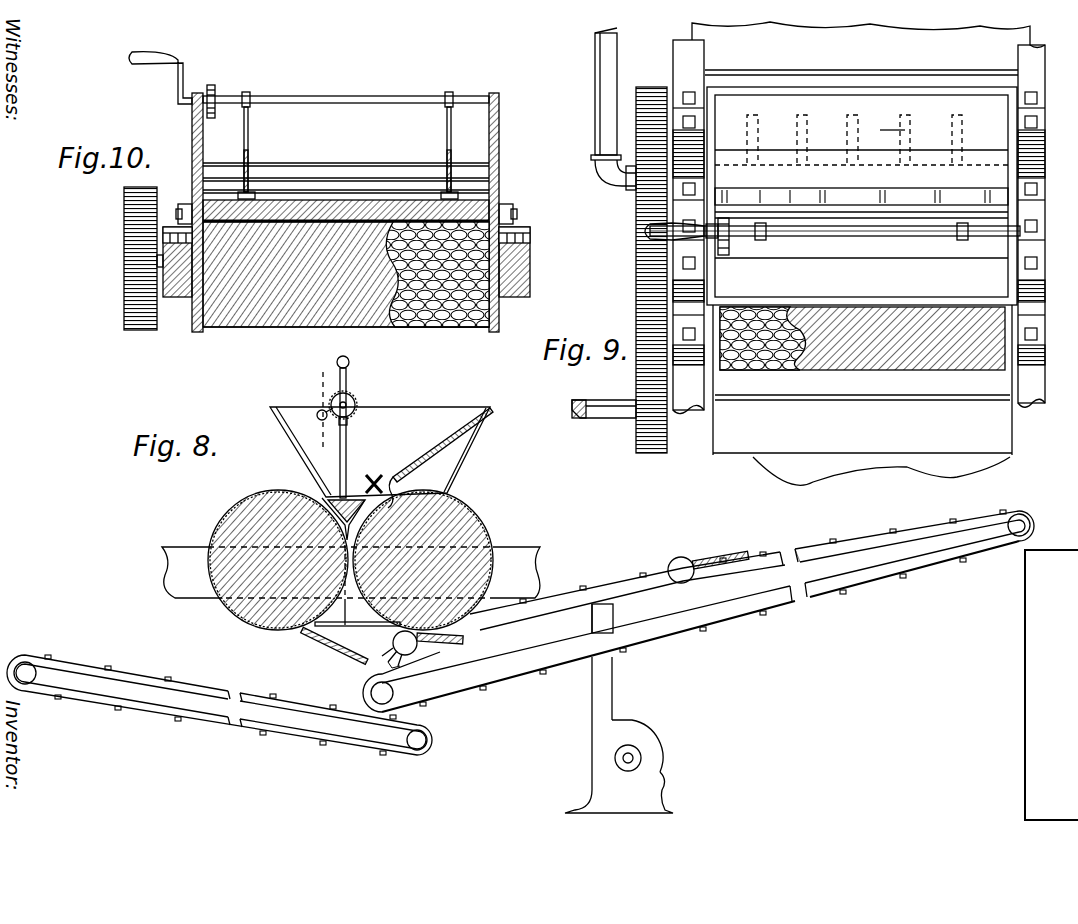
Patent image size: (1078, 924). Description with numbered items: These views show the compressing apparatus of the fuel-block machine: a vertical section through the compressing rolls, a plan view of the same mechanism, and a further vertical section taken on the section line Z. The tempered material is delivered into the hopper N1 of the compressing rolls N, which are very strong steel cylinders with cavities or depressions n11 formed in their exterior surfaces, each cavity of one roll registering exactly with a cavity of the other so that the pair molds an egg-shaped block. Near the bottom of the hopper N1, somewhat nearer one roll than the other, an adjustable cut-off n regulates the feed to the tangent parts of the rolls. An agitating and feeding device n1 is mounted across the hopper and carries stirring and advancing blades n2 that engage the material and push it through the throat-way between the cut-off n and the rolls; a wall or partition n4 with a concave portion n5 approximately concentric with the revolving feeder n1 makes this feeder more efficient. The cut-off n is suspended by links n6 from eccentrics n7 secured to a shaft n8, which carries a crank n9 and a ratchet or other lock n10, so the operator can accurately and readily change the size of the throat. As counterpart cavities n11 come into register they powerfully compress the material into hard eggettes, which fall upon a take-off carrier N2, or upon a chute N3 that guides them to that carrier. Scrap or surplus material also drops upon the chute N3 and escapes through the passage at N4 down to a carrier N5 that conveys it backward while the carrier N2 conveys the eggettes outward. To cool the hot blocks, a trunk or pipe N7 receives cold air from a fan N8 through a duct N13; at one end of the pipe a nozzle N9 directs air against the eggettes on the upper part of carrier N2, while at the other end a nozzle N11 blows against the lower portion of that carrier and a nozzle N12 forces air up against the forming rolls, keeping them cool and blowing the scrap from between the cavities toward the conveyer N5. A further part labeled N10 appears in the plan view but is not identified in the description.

In FIG. 10, the compressing rolls N is at (330, 279).
In FIG. 9, the compressing rolls N is at (862, 338).
In FIG. 8, the compressing rolls N is at (340, 559).
In FIG. 10, the hopper N1 is at (345, 212).
In FIG. 9, the hopper N1 is at (862, 196).
In FIG. 8, the hopper N1 is at (380, 435).
In FIG. 9, the take-off carrier N2 is at (859, 218).
In FIG. 8, the take-off carrier N2 is at (809, 543).
In FIG. 8, the chute N3 is at (332, 650).
In FIG. 8, the passage N4 is at (686, 611).
In FIG. 9, the carrier N5 is at (792, 395).
In FIG. 8, the carrier N5 is at (219, 701).
In FIG. 9, the trunk or pipe N7 is at (598, 109).
In FIG. 8, the trunk or pipe N7 is at (582, 596).
In FIG. 8, the fan N8 is at (650, 737).
In FIG. 8, the nozzle N9 is at (708, 552).
In FIG. 9, the bar N10 is at (876, 170).
In FIG. 8, the nozzle N11 is at (463, 640).
In FIG. 8, the nozzle N12 is at (386, 647).
In FIG. 8, the duct N13 is at (619, 735).
In FIG. 9, the adjustable cut-off n is at (822, 246).
In FIG. 8, the adjustable cut-off n is at (334, 495).
In FIG. 10, the agitating and feeding device n1 is at (346, 163).
In FIG. 8, the agitating and feeding device n1 is at (376, 472).
In FIG. 10, the stirring and advancing blades n2 is at (296, 168).
In FIG. 9, the stirring and advancing blades n2 is at (861, 182).
In FIG. 8, the stirring and advancing blades n2 is at (370, 478).
In FIG. 8, the wall or partition n4 is at (443, 445).
In FIG. 8, the concave portion n5 is at (395, 484).
In FIG. 10, the links n6 is at (358, 149).
In FIG. 8, the links n6 is at (340, 450).
In FIG. 10, the eccentrics n7 is at (348, 135).
In FIG. 9, the eccentrics n7 is at (861, 238).
In FIG. 8, the eccentrics n7 is at (347, 421).
In FIG. 10, the shaft n8 is at (346, 88).
In FIG. 9, the shaft n8 is at (873, 238).
In FIG. 8, the shaft n8 is at (352, 400).
In FIG. 10, the crank n9 is at (160, 78).
In FIG. 9, the crank n9 is at (645, 234).
In FIG. 8, the crank n9 is at (354, 357).
In FIG. 10, the ratchet or other lock n10 is at (202, 83).
In FIG. 9, the ratchet or other lock n10 is at (724, 247).
In FIG. 8, the ratchet or other lock n10 is at (319, 404).
In FIG. 10, the cavities or depressions n11 is at (327, 267).
In FIG. 9, the cavities or depressions n11 is at (696, 270).
In FIG. 8, the cavities or depressions n11 is at (351, 538).
In FIG. 8, the section line z-z Z is at (320, 400).